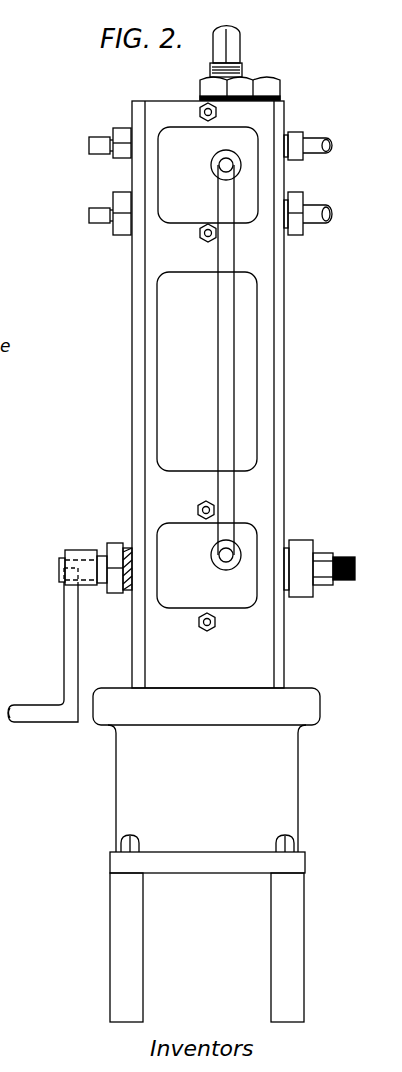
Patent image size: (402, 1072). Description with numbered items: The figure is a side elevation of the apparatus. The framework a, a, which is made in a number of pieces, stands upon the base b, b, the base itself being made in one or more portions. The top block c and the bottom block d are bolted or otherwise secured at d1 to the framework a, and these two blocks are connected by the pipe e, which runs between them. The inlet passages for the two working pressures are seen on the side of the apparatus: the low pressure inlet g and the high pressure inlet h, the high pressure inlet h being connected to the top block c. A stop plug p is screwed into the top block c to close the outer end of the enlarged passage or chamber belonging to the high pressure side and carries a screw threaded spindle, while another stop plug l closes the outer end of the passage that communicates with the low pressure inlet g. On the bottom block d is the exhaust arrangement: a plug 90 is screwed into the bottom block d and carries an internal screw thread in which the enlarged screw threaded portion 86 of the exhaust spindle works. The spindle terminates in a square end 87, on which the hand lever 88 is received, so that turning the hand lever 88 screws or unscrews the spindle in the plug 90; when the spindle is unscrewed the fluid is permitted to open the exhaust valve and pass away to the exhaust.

The framework a is at (140, 330).
The base b is at (132, 953).
The top block c is at (208, 175).
The bottom block d is at (207, 565).
The securing point of blocks d1 is at (217, 113).
The pipe e is at (216, 340).
The stop plug p is at (113, 136).
The stop plug l is at (112, 198).
The high pressure inlet h is at (318, 151).
The low pressure inlet g is at (313, 219).
The enlarged screw threaded portion 86 is at (107, 548).
The square end 87 is at (58, 576).
The hand lever 88 is at (70, 620).
The plug 90 is at (116, 588).